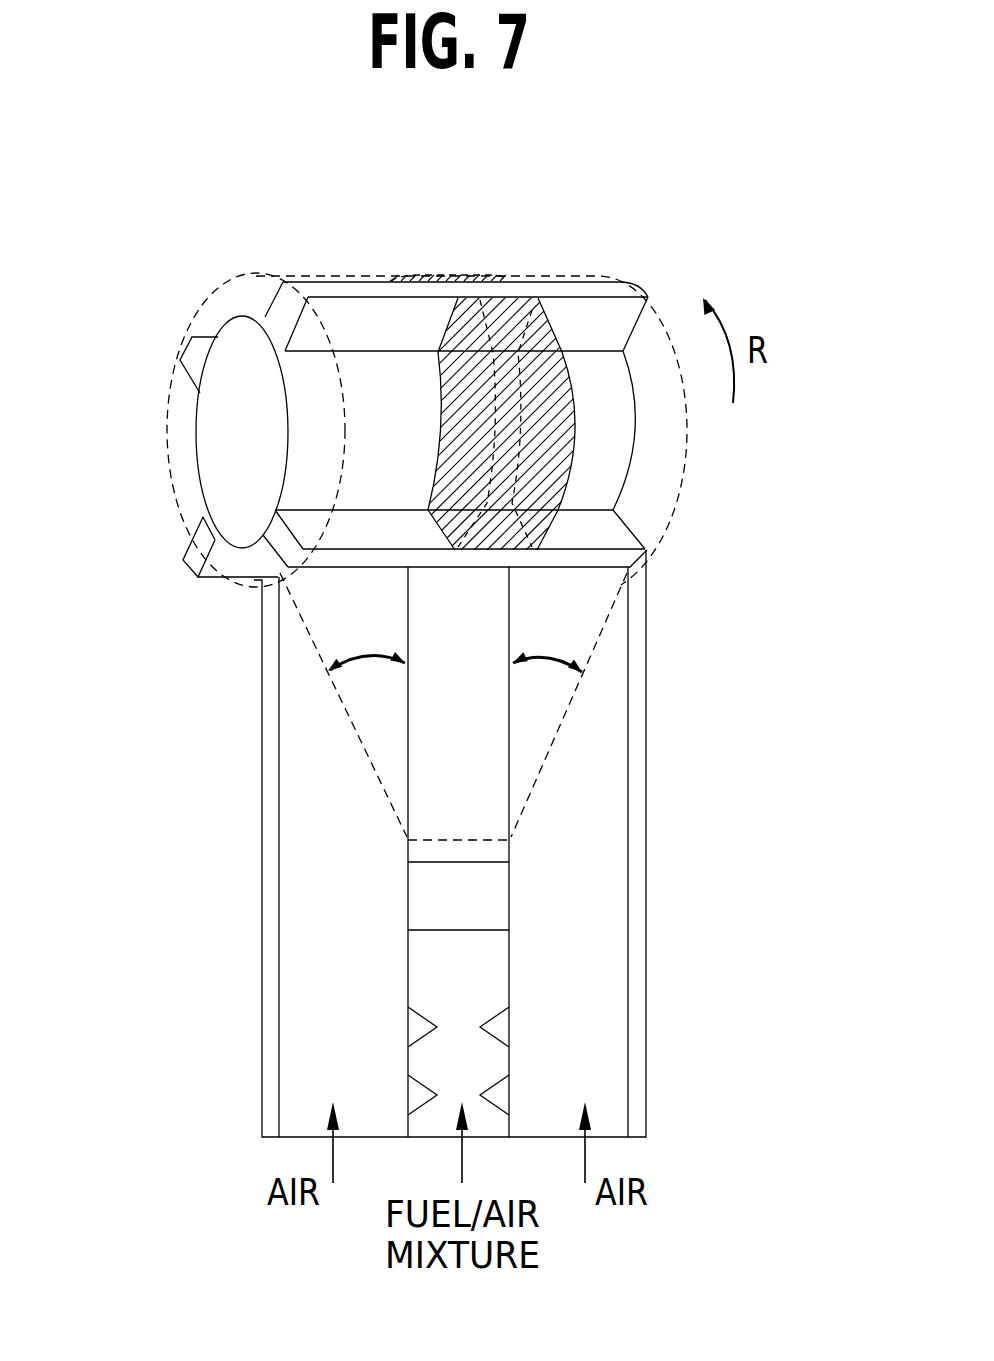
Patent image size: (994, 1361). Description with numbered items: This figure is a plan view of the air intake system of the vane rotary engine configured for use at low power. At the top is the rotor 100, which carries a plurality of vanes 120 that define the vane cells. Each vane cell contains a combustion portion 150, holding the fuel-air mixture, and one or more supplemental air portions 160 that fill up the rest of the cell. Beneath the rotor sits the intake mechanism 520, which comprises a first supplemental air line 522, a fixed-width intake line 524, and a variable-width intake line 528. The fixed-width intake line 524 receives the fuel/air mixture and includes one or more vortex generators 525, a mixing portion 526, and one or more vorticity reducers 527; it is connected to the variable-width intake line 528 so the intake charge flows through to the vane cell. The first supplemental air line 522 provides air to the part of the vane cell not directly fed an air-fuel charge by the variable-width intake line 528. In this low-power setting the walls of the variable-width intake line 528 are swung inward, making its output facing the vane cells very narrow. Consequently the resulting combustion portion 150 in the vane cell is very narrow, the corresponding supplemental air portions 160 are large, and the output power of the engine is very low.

The rotor 100 is at (195, 448).
The vanes 120 is at (590, 277).
The combustion portion 150 is at (489, 298).
The supplemental air portion 160 is at (658, 440).
The intake mechanism 520 is at (647, 848).
The first supplemental air line 522 is at (612, 1007).
The fixed-width intake line 524 is at (511, 948).
The vortex generators 525 is at (413, 1027).
The mixing portion 526 is at (430, 962).
The vorticity reducers 527 is at (410, 897).
The variable-width intake line 528 is at (511, 760).